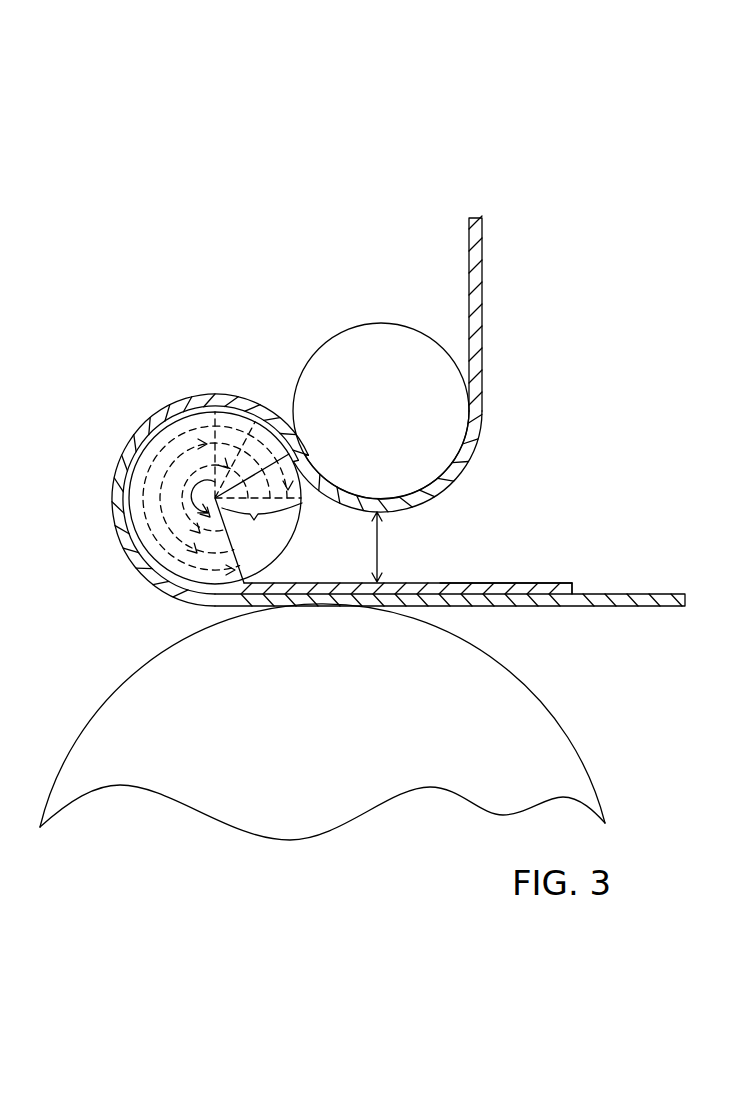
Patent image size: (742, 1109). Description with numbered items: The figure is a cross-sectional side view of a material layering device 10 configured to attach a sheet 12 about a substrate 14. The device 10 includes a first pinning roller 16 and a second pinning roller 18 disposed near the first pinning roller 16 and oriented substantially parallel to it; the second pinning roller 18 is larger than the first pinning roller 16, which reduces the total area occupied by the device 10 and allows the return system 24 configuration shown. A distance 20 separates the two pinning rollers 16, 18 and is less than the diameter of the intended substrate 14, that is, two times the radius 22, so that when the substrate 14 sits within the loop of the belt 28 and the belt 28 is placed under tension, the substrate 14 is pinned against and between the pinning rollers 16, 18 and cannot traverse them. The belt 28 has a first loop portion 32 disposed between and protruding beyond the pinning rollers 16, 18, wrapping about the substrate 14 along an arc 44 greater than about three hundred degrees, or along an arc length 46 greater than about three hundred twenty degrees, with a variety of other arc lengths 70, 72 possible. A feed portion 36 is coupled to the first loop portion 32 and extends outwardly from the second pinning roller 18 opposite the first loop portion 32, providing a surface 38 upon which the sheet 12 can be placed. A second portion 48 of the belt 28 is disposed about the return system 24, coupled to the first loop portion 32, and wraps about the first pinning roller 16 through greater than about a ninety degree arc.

The material layering device 10 is at (580, 150).
The sheet 12 is at (469, 503).
The substrate 14 is at (170, 489).
The first pinning roller 16 is at (392, 406).
The second pinning roller 18 is at (318, 724).
The distance 20 is at (378, 543).
The radius 22 is at (262, 523).
The return system 24 is at (423, 187).
The belt 28 is at (631, 597).
The first loop portion 32 is at (206, 287).
The feed portion 36 is at (658, 473).
The surface 38 is at (634, 579).
The arc 44 is at (198, 508).
The arc length 46 is at (143, 508).
The second portion 48 is at (551, 338).
The arc length 70 is at (162, 483).
The arc length 72 is at (193, 475).